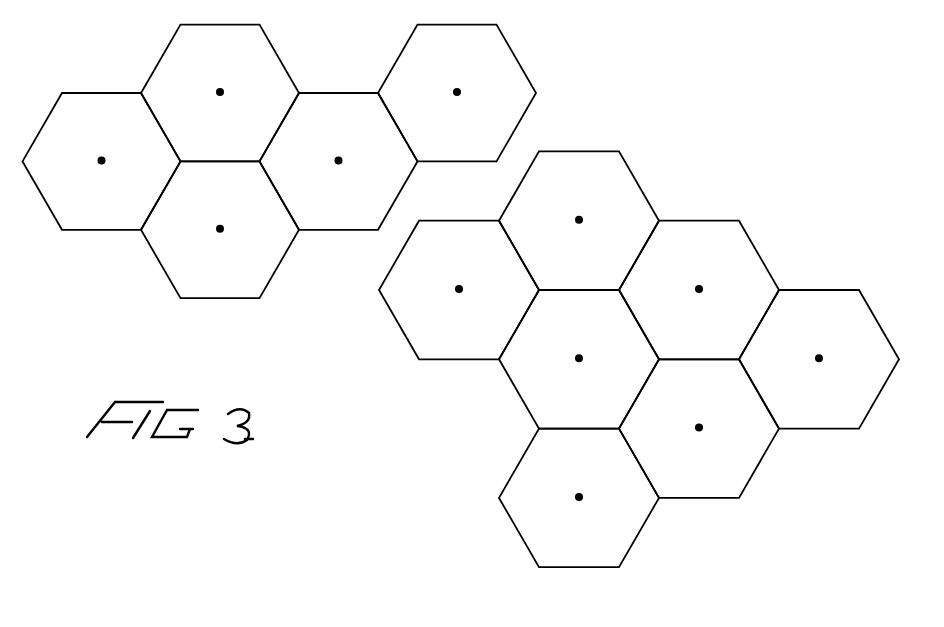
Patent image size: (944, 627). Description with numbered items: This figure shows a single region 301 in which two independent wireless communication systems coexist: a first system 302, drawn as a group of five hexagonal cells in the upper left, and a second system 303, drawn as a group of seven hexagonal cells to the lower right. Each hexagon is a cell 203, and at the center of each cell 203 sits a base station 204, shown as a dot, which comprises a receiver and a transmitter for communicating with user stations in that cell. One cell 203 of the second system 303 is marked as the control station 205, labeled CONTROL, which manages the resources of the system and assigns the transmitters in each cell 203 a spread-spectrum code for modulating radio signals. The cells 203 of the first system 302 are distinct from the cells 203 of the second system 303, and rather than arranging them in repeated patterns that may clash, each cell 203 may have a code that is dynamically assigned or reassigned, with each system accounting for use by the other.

The cell 203 is at (461, 288).
The base station 204 is at (477, 320).
The control station 205 is at (428, 248).
The region 301 is at (780, 180).
The first system 302 is at (537, 41).
The second system 303 is at (455, 429).